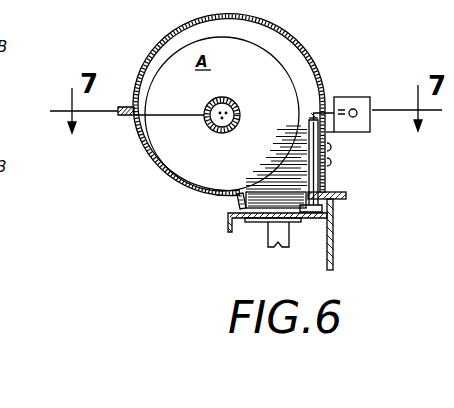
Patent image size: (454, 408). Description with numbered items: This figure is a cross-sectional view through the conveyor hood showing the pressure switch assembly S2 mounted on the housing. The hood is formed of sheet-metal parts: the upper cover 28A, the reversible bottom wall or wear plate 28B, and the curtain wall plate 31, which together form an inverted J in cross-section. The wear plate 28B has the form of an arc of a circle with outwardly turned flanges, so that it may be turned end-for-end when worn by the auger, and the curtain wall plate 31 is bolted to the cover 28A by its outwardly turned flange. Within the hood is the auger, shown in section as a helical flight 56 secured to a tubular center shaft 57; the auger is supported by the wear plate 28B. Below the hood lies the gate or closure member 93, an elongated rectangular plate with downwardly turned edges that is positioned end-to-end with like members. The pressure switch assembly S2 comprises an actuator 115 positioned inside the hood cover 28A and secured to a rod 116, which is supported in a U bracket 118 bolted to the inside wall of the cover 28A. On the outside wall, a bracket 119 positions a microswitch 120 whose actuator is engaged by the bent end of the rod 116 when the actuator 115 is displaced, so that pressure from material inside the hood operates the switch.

The upper cover 28A is at (316, 62).
The reversible bottom wall or wear plate 28B is at (165, 179).
The helical flight 56 is at (168, 59).
The tubular center shaft 57 is at (231, 102).
The actuator 115 is at (296, 176).
The rod 116 is at (317, 94).
The microswitch 120 is at (372, 99).
The pressure switch assembly S2 is at (366, 88).
The bracket 119 is at (358, 134).
The U bracket 118 is at (334, 207).
The curtain wall plate 31 is at (336, 255).
The gate or closure member 93 is at (228, 222).